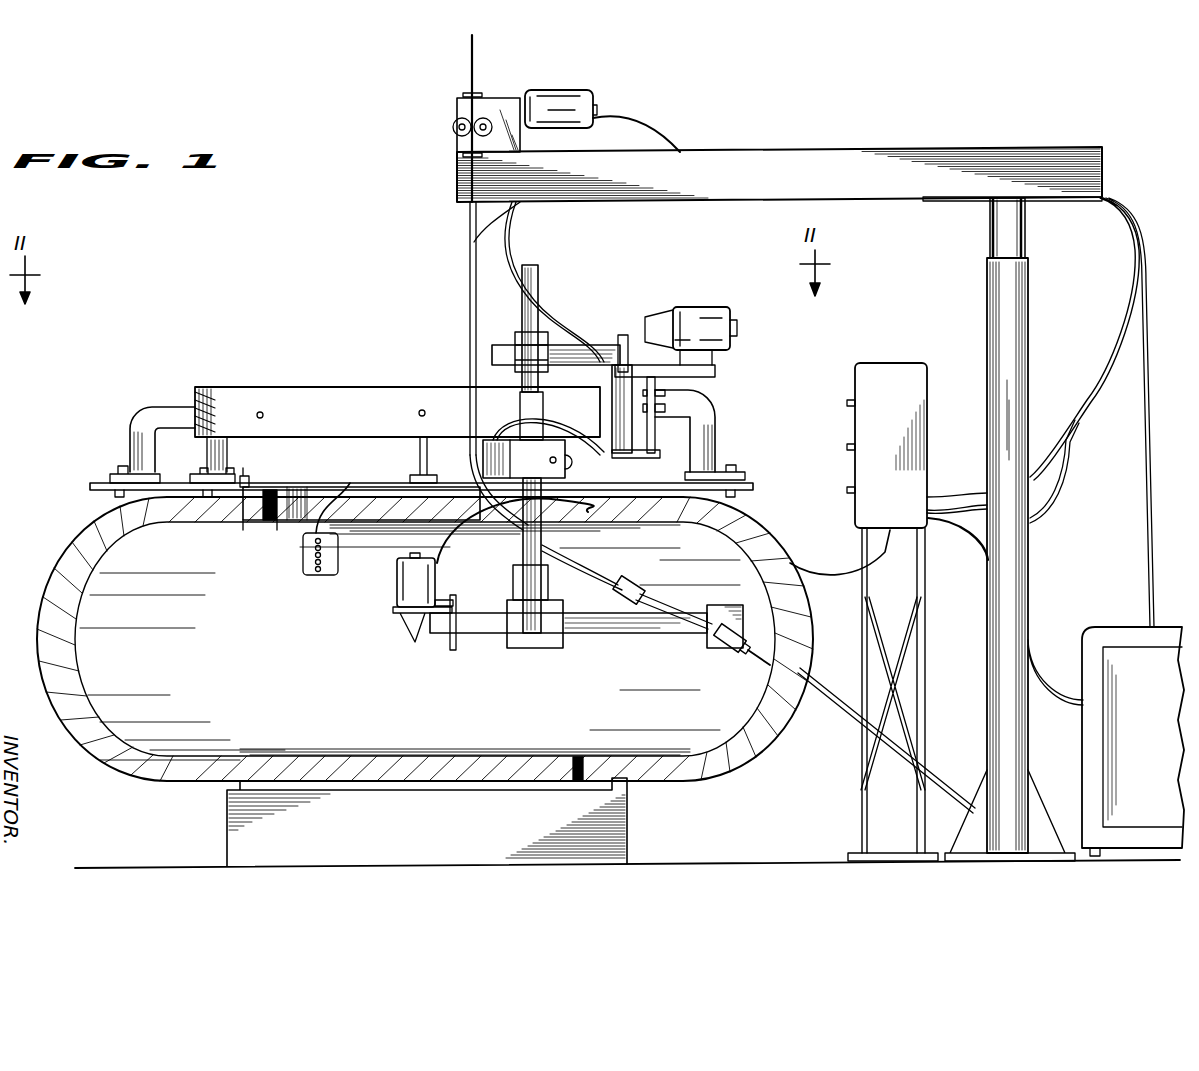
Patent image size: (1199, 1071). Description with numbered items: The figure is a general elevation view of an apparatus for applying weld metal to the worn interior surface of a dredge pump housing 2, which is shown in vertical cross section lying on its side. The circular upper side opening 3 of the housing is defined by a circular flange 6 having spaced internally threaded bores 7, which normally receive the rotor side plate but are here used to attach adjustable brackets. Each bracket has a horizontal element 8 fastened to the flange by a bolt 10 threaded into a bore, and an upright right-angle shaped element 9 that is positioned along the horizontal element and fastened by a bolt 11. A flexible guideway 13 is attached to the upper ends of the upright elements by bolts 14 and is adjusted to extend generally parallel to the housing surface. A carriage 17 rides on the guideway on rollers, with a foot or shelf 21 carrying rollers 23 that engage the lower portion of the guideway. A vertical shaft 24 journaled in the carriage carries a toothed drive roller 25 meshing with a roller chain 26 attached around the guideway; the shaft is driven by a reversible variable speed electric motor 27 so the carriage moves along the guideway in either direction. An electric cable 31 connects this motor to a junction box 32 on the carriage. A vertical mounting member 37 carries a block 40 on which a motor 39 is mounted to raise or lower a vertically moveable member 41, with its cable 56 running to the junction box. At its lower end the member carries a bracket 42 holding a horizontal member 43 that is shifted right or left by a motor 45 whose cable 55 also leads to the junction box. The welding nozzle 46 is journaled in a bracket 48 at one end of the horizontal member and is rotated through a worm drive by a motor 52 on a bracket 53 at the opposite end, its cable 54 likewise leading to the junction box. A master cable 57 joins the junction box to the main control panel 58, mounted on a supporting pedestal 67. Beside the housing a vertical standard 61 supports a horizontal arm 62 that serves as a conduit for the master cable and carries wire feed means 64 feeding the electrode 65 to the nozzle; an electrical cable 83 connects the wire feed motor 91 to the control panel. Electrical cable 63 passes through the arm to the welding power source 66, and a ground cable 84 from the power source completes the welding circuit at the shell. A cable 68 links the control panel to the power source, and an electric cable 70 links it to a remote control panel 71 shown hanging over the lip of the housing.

The dredge pump housing 2 is at (768, 536).
The upper side opening 3 is at (268, 518).
The circular flange 6 is at (262, 505).
The internally threaded bores 7 is at (245, 508).
The horizontal element 8 is at (100, 490).
The upright right-angle shaped element 9 is at (143, 420).
The bolt 10 is at (246, 477).
The bolt 11 is at (118, 468).
The flexible guideway 13 is at (262, 387).
The bolts 14 is at (212, 414).
The carriage 17 is at (718, 380).
The foot or shelf 21 is at (626, 458).
The rollers 23 is at (656, 440).
The vertical shaft 24 is at (666, 394).
The toothed drive roller 25 is at (667, 409).
The roller chain 26 is at (197, 400).
The reversible variable speed electric motor 27 is at (700, 307).
The electric cable 31 is at (716, 370).
The junction box 32 is at (611, 414).
The vertical mounting member 37 is at (521, 310).
The reversible variable speed electric motor 39 is at (484, 462).
The block 40 is at (567, 462).
The vertically moveable member 41 is at (520, 562).
The bracket 42 is at (563, 646).
The horizontal member 43 is at (620, 634).
The reversible variable speed electric motor 45 is at (512, 586).
The welding nozzle 46 is at (748, 652).
The bracket 48 is at (730, 605).
The reversible electric motor 52 is at (396, 598).
The bracket 53 is at (393, 612).
The electric cable 54 is at (448, 538).
The electric cable 55 is at (556, 528).
The electric cable 56 is at (509, 428).
The master cable 57 is at (560, 303).
The main control panel 58 is at (900, 363).
The vertical standard 61 is at (985, 478).
The horizontal arm 62 is at (768, 152).
The electrical cable 63 is at (495, 224).
The wire feed means 64 is at (487, 116).
The electrode 65 is at (469, 65).
The welding power source 66 is at (1115, 627).
The supporting pedestal 67 is at (923, 600).
The cable 68 is at (1052, 662).
The electric cable 70 is at (352, 484).
The remote control panel 71 is at (302, 563).
The electrical cable 83 is at (650, 132).
The ground cable 84 is at (940, 778).
The wire feed motor 91 is at (568, 89).